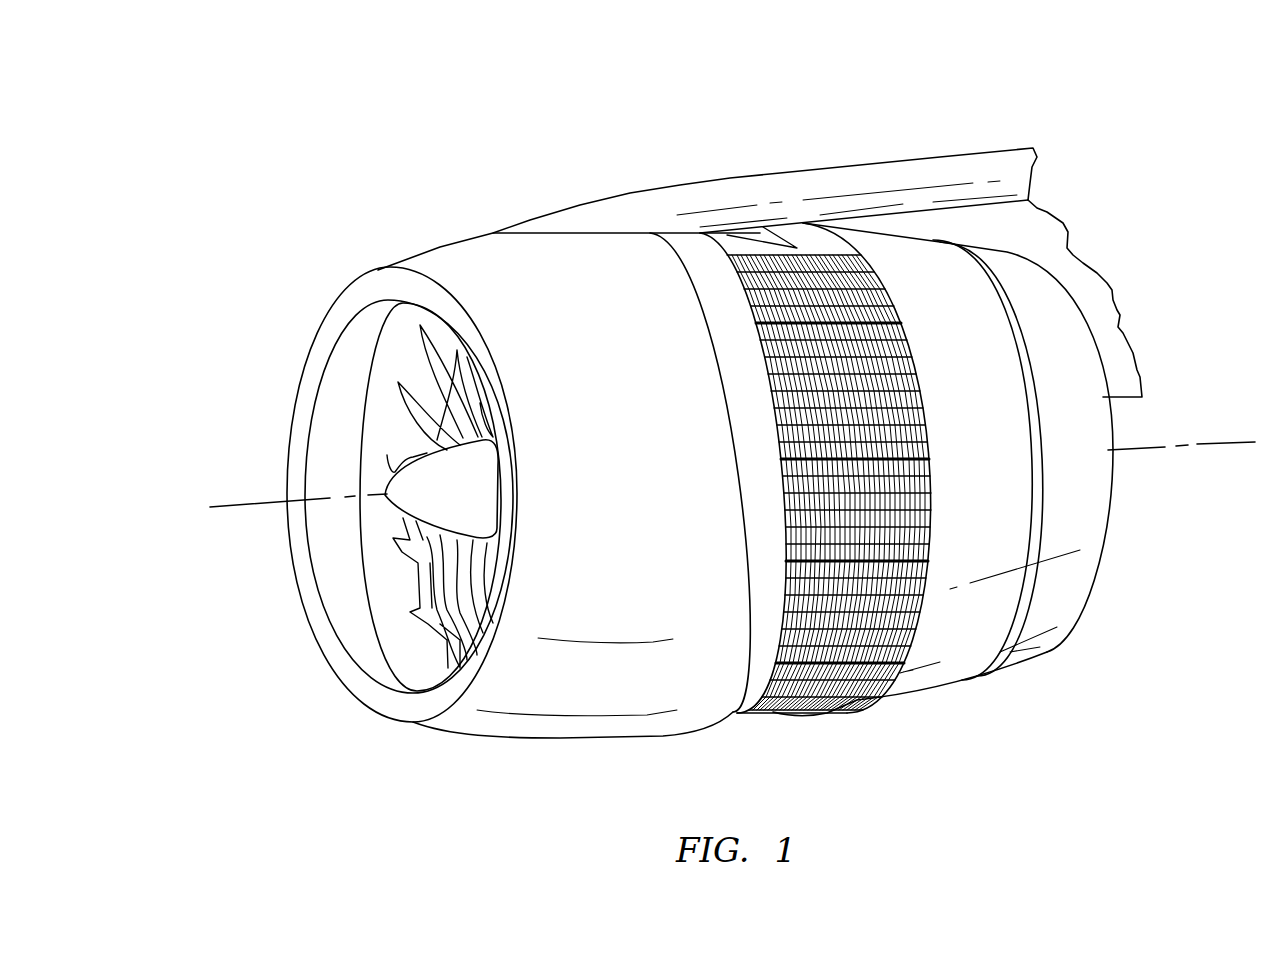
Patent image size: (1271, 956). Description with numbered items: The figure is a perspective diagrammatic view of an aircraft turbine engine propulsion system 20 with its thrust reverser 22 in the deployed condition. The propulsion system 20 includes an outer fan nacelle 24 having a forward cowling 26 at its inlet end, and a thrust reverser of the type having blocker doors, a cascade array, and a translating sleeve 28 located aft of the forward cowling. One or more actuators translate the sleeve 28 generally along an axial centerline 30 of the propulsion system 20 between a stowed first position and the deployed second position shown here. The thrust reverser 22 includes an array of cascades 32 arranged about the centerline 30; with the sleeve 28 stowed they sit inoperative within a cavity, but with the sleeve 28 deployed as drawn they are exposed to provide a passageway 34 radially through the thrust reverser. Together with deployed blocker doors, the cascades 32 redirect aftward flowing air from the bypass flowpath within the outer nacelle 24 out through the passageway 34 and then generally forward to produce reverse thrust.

The propulsion system 20 is at (321, 118).
The thrust reverser 22 is at (793, 215).
The outer nacelle 24 is at (457, 220).
The forward cowling 26 is at (570, 743).
The translating sleeve 28 is at (935, 690).
The axial centerline 30 is at (1218, 450).
The thrust reverser cascades 32 is at (758, 302).
The passageway 34 is at (757, 722).